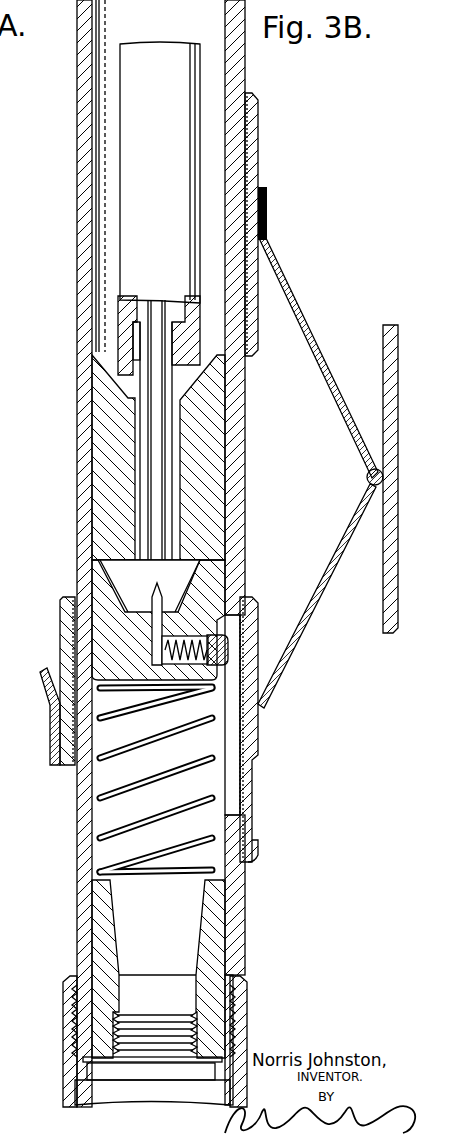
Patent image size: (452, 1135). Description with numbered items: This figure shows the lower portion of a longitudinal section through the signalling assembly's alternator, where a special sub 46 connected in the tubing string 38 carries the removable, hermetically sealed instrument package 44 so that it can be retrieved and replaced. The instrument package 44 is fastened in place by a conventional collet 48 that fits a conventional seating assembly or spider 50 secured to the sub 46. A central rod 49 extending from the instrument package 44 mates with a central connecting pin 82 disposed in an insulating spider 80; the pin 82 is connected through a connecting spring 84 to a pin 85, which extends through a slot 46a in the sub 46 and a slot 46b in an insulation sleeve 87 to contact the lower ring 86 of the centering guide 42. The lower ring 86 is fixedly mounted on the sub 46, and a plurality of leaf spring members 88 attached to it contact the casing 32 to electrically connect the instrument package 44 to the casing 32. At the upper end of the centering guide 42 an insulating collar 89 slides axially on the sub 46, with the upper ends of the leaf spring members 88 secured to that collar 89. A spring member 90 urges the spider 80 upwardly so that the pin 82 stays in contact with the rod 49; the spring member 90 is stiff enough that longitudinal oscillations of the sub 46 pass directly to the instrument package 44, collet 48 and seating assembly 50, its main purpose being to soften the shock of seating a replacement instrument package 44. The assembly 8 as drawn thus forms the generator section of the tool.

The nozzle assembly 8 is at (181, 961).
The casing 32 is at (386, 578).
The tubing string 38 is at (247, 1047).
The centering guide 42 is at (303, 626).
The instrument package 44 is at (122, 130).
The sub 46 is at (82, 212).
The slot in the sub 46a is at (233, 748).
The slot in the insulation sleeve 46b is at (256, 772).
The collet 48 is at (140, 357).
The central rod 49 is at (150, 538).
The seating assembly or spider 50 is at (100, 487).
The insulating spider 80 is at (92, 627).
The central connecting pin 82 is at (157, 617).
The connecting spring 84 is at (213, 636).
The pin 85 is at (223, 656).
The lower ring 86 is at (258, 850).
The insulation sleeve 87 is at (247, 93).
The leaf spring members 88 is at (312, 342).
The insulating collar 89 is at (262, 180).
The spring member 90 is at (212, 796).